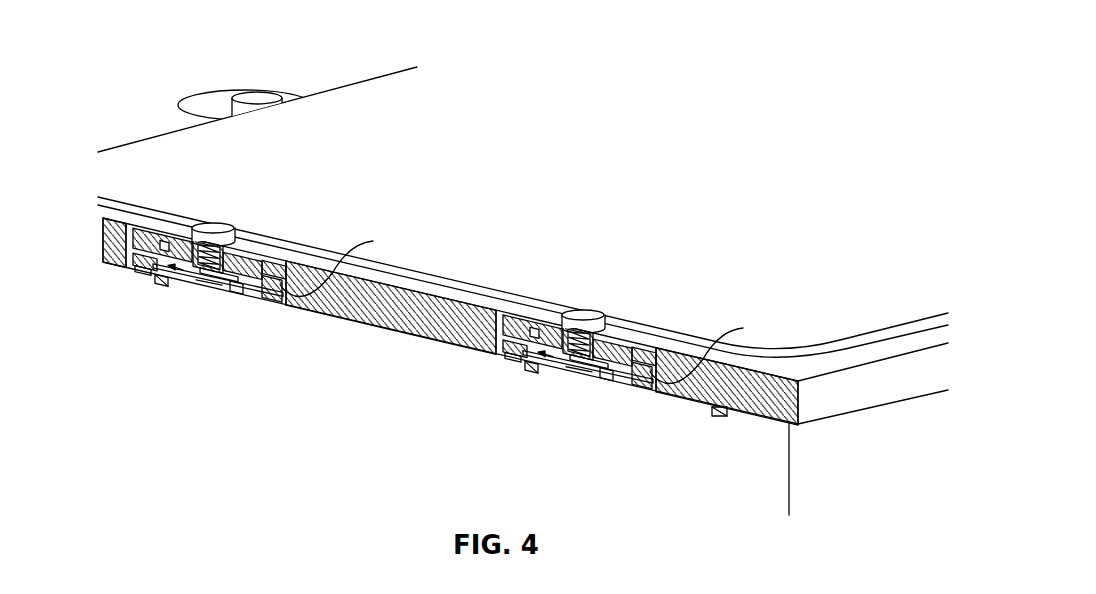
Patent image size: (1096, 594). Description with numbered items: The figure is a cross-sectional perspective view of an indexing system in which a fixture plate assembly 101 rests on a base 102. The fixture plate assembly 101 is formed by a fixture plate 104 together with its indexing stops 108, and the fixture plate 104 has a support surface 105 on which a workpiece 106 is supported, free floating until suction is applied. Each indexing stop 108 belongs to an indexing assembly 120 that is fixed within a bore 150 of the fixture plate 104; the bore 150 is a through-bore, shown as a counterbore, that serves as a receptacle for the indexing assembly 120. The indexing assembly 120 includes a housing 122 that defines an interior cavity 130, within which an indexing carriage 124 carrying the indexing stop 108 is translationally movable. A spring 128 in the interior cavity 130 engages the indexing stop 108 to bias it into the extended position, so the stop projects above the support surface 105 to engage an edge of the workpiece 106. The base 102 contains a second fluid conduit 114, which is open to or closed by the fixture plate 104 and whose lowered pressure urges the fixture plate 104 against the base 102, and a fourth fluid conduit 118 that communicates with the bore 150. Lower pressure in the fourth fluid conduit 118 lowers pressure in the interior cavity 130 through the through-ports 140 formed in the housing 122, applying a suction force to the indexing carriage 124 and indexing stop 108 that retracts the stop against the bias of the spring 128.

The fixture plate assembly 101 is at (930, 422).
The base 102 is at (156, 404).
The fixture plate 104 is at (888, 415).
The support surface 105 is at (900, 345).
The workpiece 106 is at (525, 132).
The indexing stop 108 is at (258, 98).
The second fluid conduit 114 is at (731, 417).
The fourth fluid conduit 118 is at (164, 286).
The indexing assembly 120 is at (215, 84).
The housing 122 is at (207, 294).
The indexing carriage 124 is at (240, 258).
The spring 128 is at (203, 222).
The interior cavity 130 is at (143, 273).
The through-ports 140 is at (237, 297).
The bore 150 is at (530, 309).